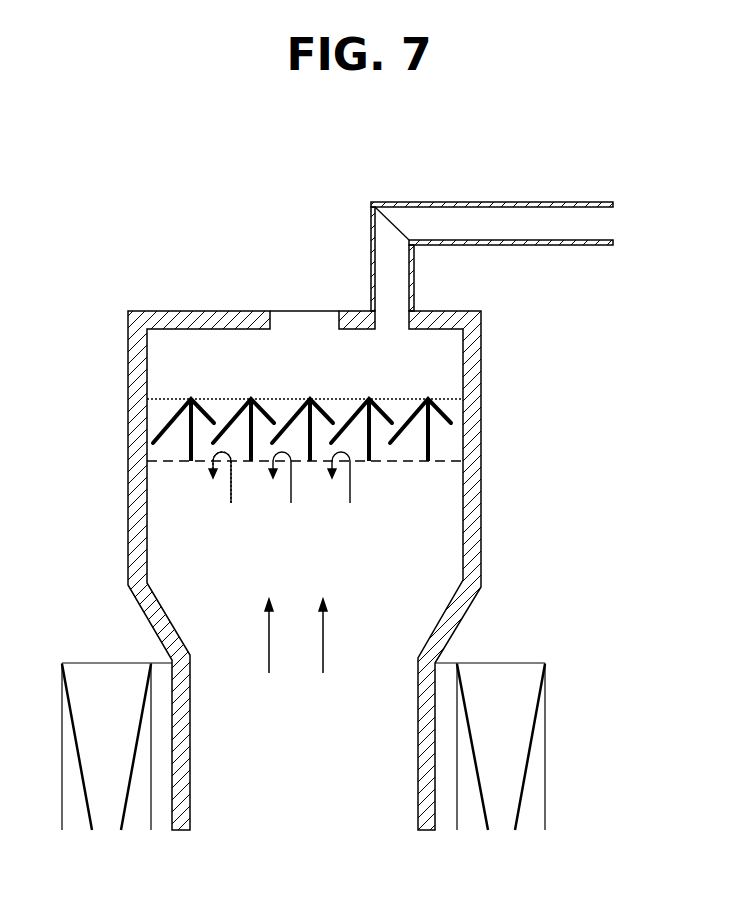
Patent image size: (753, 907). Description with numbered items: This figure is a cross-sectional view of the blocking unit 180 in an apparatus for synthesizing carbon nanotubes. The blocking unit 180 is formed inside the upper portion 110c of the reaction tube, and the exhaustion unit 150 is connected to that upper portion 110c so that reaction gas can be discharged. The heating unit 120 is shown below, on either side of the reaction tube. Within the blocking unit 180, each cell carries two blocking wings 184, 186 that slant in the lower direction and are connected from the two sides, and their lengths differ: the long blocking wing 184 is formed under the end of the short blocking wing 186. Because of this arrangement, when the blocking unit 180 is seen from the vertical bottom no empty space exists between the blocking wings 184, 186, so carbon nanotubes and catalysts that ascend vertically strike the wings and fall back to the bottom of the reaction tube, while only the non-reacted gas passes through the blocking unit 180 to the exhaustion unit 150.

The upper portion of the reaction tube 110c is at (465, 543).
The exhaustion unit 150 is at (477, 212).
The blocking unit 180 is at (438, 439).
The long blocking wing 184 is at (170, 423).
The short blocking wing 186 is at (191, 399).
The heating unit 120 is at (518, 747).